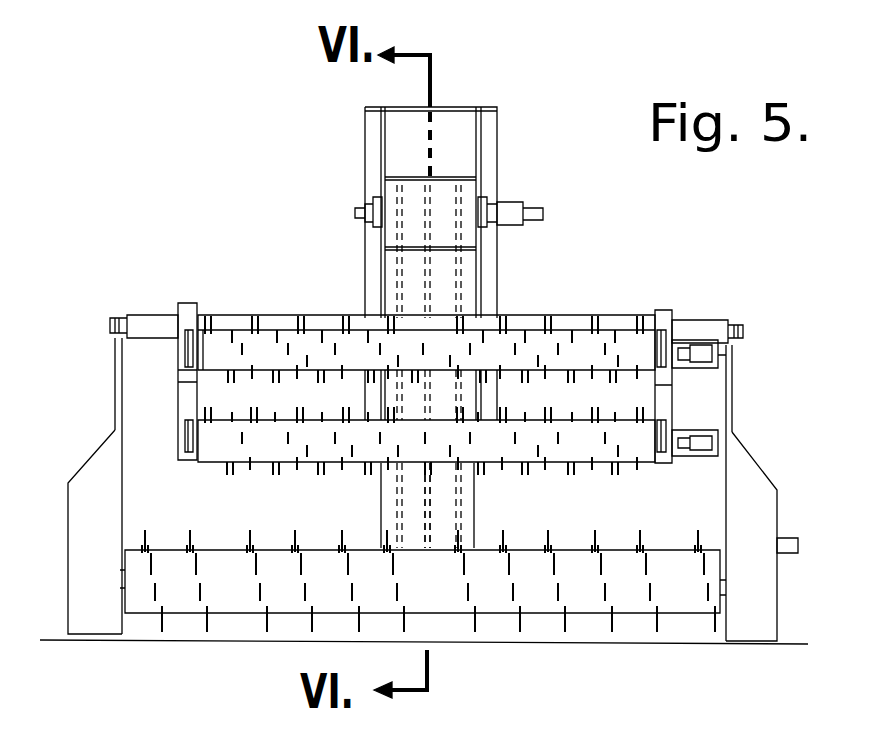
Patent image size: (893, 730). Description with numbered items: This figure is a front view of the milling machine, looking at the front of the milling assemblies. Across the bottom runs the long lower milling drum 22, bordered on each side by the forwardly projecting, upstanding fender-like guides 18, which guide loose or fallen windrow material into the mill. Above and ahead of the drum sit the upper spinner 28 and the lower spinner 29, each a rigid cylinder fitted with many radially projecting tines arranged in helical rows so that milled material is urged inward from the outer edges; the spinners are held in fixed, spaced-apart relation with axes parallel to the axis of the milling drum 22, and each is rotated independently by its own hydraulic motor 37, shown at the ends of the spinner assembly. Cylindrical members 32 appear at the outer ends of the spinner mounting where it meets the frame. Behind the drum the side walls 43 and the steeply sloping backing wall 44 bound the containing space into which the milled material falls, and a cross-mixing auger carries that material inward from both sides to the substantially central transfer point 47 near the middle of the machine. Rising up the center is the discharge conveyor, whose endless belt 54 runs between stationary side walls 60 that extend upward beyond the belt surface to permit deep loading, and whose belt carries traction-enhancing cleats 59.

The fender-like guides 18 is at (93, 478).
The lower milling drum 22 is at (205, 602).
The upper spinner 28 is at (332, 330).
The lower spinner 29 is at (257, 466).
The pivot pins 32 is at (157, 318).
The hydraulic motors 37 is at (713, 352).
The side walls 43 is at (118, 375).
The backing wall 44 is at (280, 517).
The central transfer point 47 is at (437, 540).
The endless belt 54 is at (445, 207).
The cleats 59 is at (460, 303).
The stationary side walls 60 is at (365, 140).